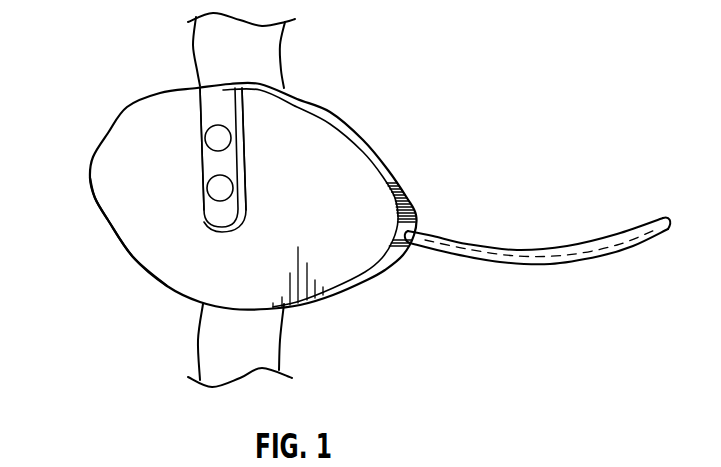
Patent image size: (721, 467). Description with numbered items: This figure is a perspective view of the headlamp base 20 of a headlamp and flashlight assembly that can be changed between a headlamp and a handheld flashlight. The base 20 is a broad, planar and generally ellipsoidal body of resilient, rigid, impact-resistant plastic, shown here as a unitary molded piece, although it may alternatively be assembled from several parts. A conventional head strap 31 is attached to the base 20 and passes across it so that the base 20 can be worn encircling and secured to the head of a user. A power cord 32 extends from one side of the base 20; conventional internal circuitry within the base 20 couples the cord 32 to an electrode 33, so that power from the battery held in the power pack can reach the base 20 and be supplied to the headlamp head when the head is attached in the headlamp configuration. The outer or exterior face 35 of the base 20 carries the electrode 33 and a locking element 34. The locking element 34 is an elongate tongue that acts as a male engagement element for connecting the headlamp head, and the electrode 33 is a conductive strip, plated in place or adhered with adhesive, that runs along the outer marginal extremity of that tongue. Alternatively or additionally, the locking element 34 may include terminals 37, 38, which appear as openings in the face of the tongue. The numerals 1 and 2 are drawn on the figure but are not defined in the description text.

The eye patch device 1 is at (82, 164).
The insert cartridge 2 is at (230, 163).
The headlamp base 20 is at (352, 113).
The head strap 31 is at (266, 61).
The power cord 32 is at (517, 262).
The electrode 33 is at (246, 160).
The locking element 34 is at (213, 163).
The exterior face 35 is at (130, 236).
The terminal 37 is at (205, 138).
The terminal 38 is at (208, 190).